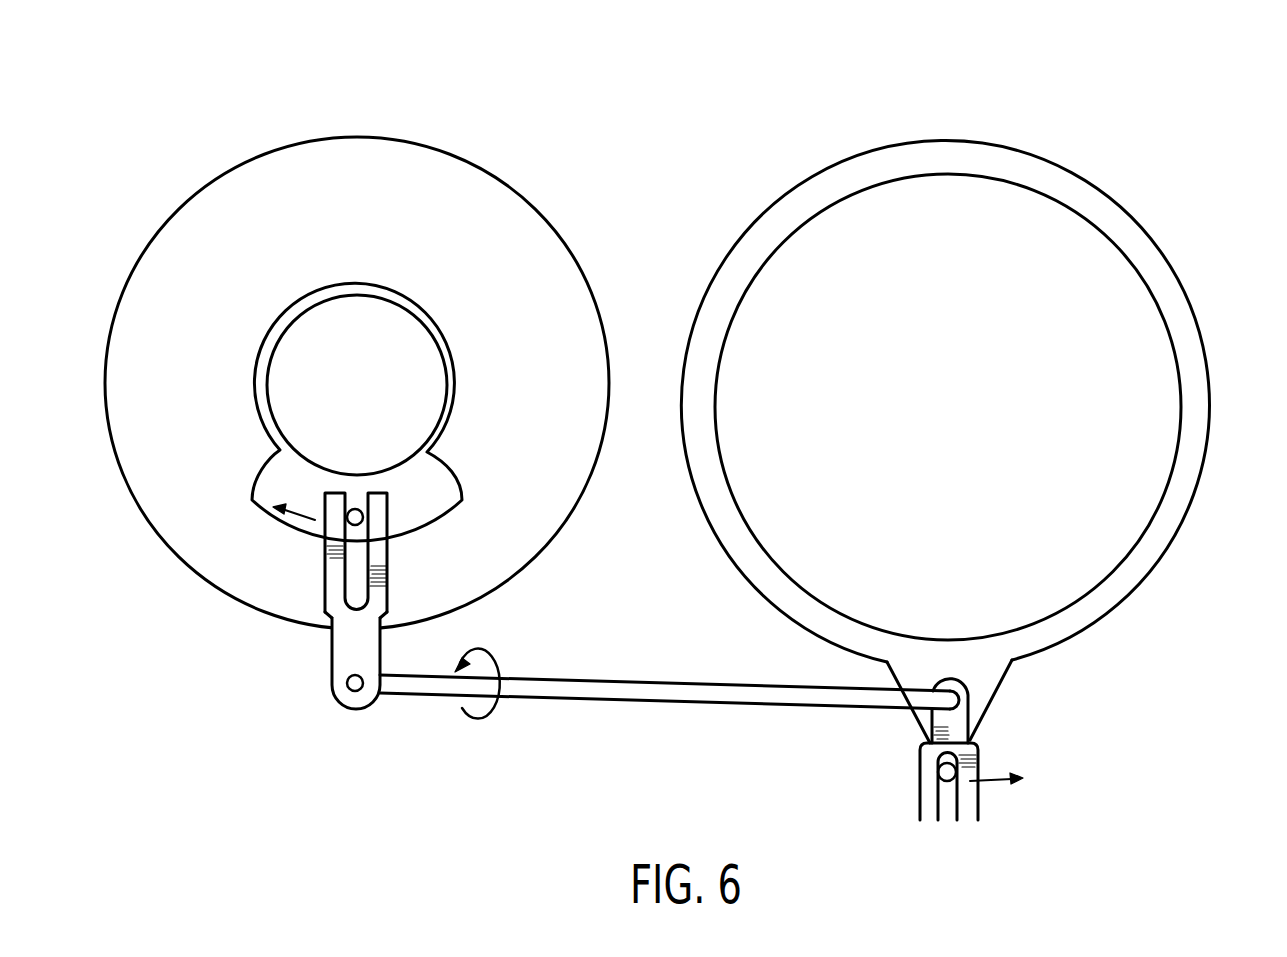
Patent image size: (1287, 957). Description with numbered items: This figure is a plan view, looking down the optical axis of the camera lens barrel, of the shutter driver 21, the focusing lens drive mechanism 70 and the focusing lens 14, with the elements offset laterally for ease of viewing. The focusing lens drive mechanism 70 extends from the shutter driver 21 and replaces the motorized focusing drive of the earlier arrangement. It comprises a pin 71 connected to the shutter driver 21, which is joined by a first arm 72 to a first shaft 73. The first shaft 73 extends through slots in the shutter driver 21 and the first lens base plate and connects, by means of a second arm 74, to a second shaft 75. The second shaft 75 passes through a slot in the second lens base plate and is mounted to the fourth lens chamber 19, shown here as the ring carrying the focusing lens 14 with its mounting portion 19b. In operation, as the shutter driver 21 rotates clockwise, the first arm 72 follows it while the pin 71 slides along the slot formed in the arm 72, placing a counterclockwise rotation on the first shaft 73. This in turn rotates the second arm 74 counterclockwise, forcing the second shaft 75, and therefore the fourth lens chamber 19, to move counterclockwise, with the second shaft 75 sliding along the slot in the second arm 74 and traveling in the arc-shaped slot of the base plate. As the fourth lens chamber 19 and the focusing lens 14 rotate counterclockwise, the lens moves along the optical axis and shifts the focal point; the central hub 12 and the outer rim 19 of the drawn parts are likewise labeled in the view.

The shutter driver 21 is at (280, 105).
The hub 12 is at (412, 330).
The focusing lens 14 is at (1148, 310).
The fourth lens chamber 19 is at (1182, 508).
The mounting lug 19b is at (998, 682).
The focusing lens drive mechanism 70 is at (674, 661).
The pin 71 is at (362, 517).
The first arm 72 is at (340, 657).
The first shaft 73 is at (545, 693).
The second arm 74 is at (968, 810).
The second shaft 75 is at (952, 773).